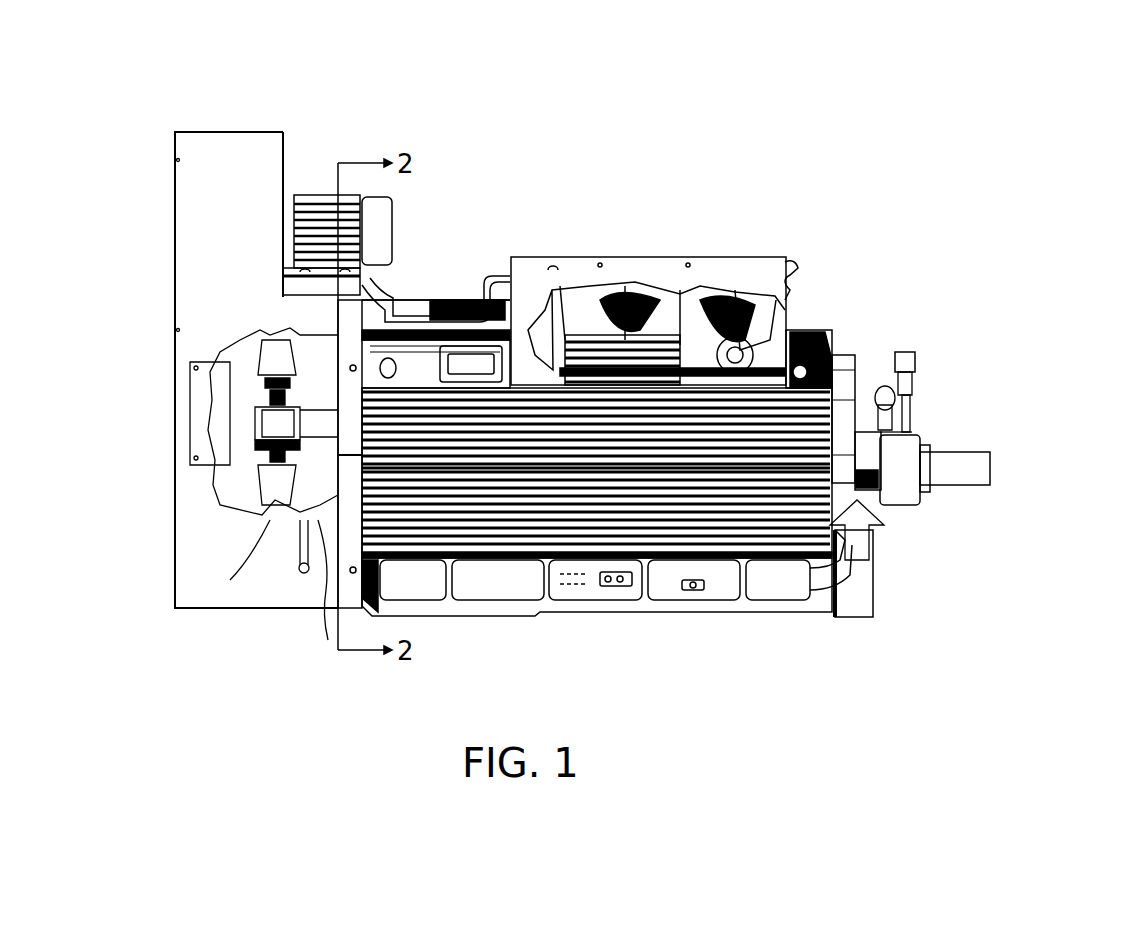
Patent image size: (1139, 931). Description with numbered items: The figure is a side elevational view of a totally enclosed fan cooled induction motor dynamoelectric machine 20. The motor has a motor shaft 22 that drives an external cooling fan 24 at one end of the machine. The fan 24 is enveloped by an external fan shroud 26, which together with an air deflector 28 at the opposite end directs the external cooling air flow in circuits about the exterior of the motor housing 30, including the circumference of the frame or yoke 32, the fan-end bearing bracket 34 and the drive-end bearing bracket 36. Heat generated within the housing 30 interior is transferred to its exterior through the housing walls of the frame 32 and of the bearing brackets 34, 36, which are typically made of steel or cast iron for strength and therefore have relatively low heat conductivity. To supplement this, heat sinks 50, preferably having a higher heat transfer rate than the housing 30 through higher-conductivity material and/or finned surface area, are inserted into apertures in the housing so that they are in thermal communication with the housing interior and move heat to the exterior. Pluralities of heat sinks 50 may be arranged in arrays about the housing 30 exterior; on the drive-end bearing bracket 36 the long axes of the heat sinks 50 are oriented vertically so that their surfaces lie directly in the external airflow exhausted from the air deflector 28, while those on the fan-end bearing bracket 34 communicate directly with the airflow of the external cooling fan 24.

The totally enclosed fan cooled induction motor dynamoelectric machine 20 is at (676, 658).
The motor shaft 22 is at (300, 455).
The external cooling fan 24 is at (252, 488).
The external fan shroud 26 is at (208, 104).
The air deflector 28 is at (873, 592).
The motor housing 30 is at (462, 688).
The frame or yoke 32 is at (573, 518).
The fan-end bearing bracket 34 is at (332, 500).
The drive-end bearing bracket 36 is at (884, 478).
The heat sink 50 is at (578, 338).